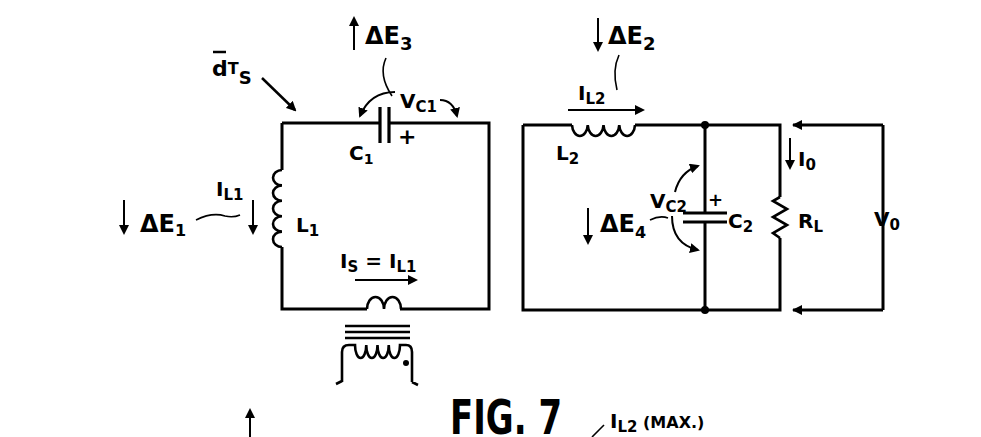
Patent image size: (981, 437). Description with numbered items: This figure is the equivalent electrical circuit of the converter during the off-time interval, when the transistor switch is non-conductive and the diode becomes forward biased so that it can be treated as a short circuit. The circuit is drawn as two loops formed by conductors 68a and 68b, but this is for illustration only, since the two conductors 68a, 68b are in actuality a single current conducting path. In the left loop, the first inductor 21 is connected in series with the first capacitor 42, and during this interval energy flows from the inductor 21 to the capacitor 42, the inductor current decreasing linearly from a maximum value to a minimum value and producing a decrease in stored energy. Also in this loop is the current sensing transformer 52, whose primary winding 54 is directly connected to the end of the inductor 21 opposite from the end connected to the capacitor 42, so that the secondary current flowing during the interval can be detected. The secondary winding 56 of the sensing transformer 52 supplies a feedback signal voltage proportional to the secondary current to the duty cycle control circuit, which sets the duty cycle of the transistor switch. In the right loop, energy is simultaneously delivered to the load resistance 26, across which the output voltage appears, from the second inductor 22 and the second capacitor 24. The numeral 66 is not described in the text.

The inductor 21 is at (286, 205).
The capacitor 42 is at (391, 138).
The primary winding 54 is at (397, 301).
The current sensing transformer 52 is at (415, 327).
The secondary winding 56 is at (379, 370).
The inductor 22 is at (630, 132).
The capacitor 24 is at (724, 210).
The load resistance 26 is at (785, 233).
The conductor 68a is at (489, 208).
The conductor 68b is at (523, 208).
The waveform 66 is at (289, 423).